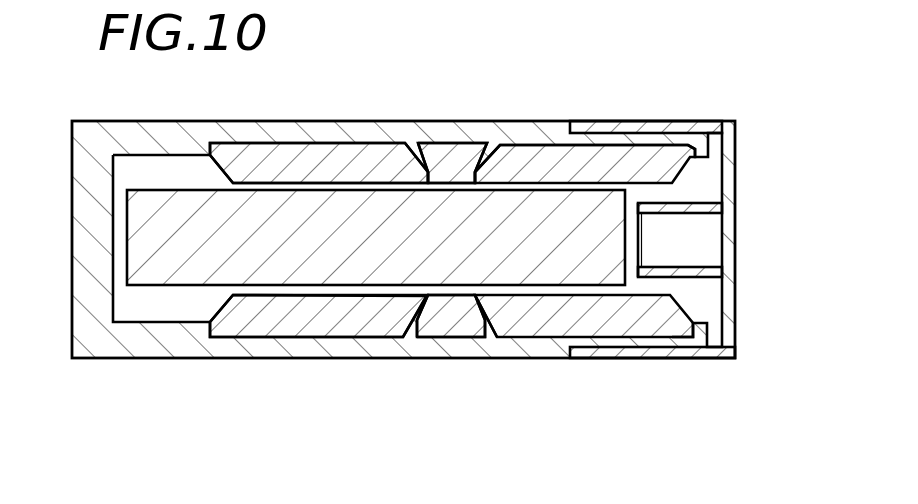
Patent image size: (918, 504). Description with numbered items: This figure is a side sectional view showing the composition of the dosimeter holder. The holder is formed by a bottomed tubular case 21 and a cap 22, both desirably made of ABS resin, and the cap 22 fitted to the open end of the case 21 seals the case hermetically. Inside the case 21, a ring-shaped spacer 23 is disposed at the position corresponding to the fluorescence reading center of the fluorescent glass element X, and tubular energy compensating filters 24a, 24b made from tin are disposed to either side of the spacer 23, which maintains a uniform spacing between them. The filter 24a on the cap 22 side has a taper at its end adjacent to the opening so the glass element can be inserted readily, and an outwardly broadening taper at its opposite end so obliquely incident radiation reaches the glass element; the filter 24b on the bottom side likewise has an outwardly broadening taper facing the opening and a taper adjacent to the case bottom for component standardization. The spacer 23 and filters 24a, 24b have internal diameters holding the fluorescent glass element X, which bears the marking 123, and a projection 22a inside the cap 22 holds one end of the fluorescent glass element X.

The bottomed tubular case 21 is at (72, 358).
The cap 22 is at (735, 358).
The projection 22a is at (675, 207).
The ring-shaped spacer 23 is at (448, 336).
The filter 24a is at (597, 308).
The filter 24b is at (293, 307).
The fluorescent glass element X is at (515, 253).
The core element 123 is at (376, 237).